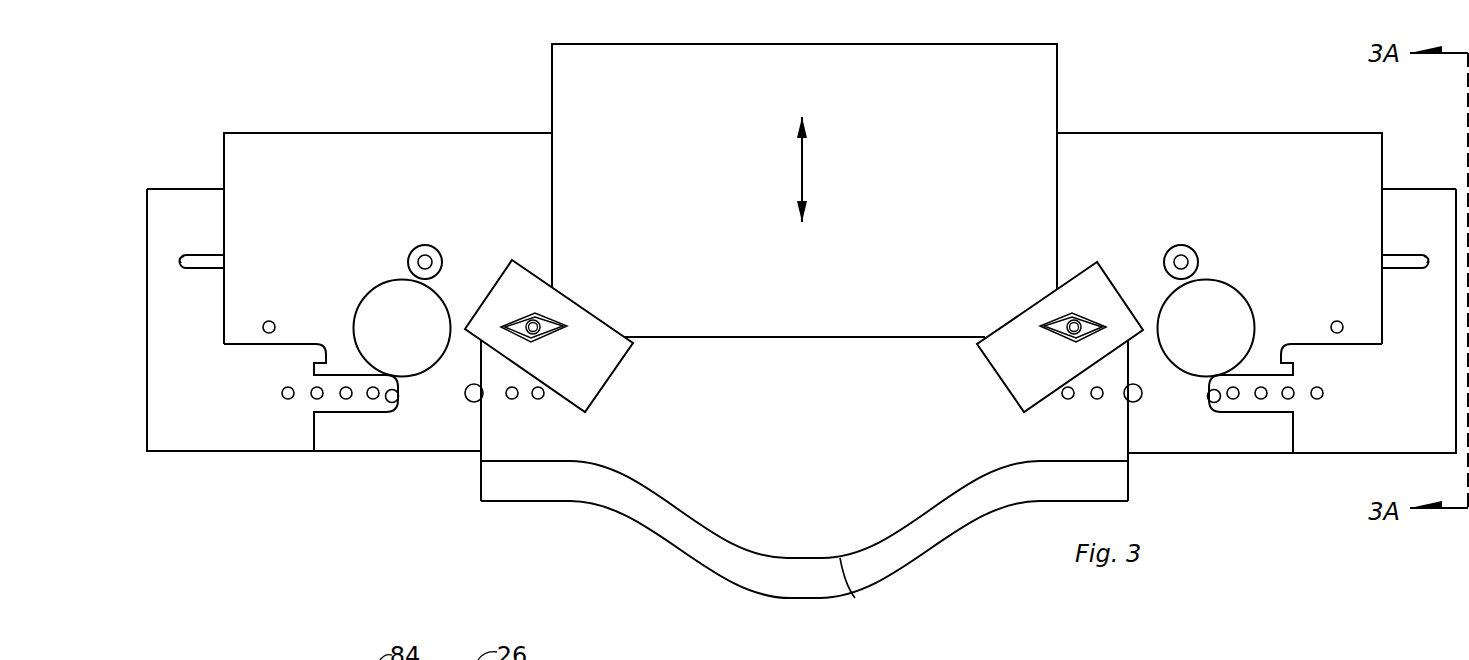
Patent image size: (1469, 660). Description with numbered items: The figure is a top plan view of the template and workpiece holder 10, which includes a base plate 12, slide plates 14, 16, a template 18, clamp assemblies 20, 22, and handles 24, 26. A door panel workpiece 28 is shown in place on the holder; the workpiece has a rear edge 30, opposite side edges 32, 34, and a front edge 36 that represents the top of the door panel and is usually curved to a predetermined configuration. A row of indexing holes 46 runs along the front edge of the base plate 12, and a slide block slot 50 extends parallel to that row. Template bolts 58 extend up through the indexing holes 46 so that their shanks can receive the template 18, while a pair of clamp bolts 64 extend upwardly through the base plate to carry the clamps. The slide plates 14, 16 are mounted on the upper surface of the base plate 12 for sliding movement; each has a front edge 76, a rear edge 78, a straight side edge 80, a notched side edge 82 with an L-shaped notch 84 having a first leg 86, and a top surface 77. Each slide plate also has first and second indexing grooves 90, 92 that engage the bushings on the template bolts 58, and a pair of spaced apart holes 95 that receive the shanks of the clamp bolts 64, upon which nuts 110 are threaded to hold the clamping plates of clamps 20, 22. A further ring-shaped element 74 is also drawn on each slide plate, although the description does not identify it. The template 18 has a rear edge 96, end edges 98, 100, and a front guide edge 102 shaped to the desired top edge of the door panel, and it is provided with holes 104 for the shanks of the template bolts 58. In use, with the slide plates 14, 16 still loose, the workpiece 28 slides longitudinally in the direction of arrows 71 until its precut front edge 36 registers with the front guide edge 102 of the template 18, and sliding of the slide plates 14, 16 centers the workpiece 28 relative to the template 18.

The template and workpiece holder 10 is at (1357, 115).
The base plate 12 is at (1451, 189).
The slide plate 14 is at (1218, 133).
The slide plate 16 is at (385, 133).
The template 18 is at (790, 337).
The clamp assembly 20 is at (1105, 265).
The clamp assembly 22 is at (505, 265).
The handle 24 is at (1219, 289).
The handle 26 is at (389, 289).
The door panel workpiece 28 is at (1058, 62).
The rear edge 30 is at (1008, 44).
The side edge 32 is at (552, 70).
The side edge 34 is at (1057, 97).
The front edge 36 is at (800, 598).
The indexing holes 46 is at (317, 399).
The slide block slot 50 is at (192, 255).
The template bolts 58 is at (512, 399).
The clamp bolts 64 is at (538, 321).
The arrows 71 is at (807, 206).
The pivot pin 74 is at (414, 249).
The front edge 76 is at (394, 455).
The top surface 77 is at (438, 201).
The rear edge 78 is at (1112, 133).
The straight side edge 80 is at (552, 195).
The notched side edge 82 is at (224, 157).
The L-shaped notch 84 is at (262, 350).
The first leg 86 is at (312, 425).
The first indexing groove 90 is at (399, 401).
The second indexing groove 92 is at (466, 386).
The holes 95 is at (274, 322).
The rear edge 96 is at (862, 337).
The end edge 98 is at (481, 440).
The end edge 100 is at (1128, 440).
The front guide edge 102 is at (855, 598).
The holes 104 is at (538, 399).
The nuts 110 is at (519, 318).